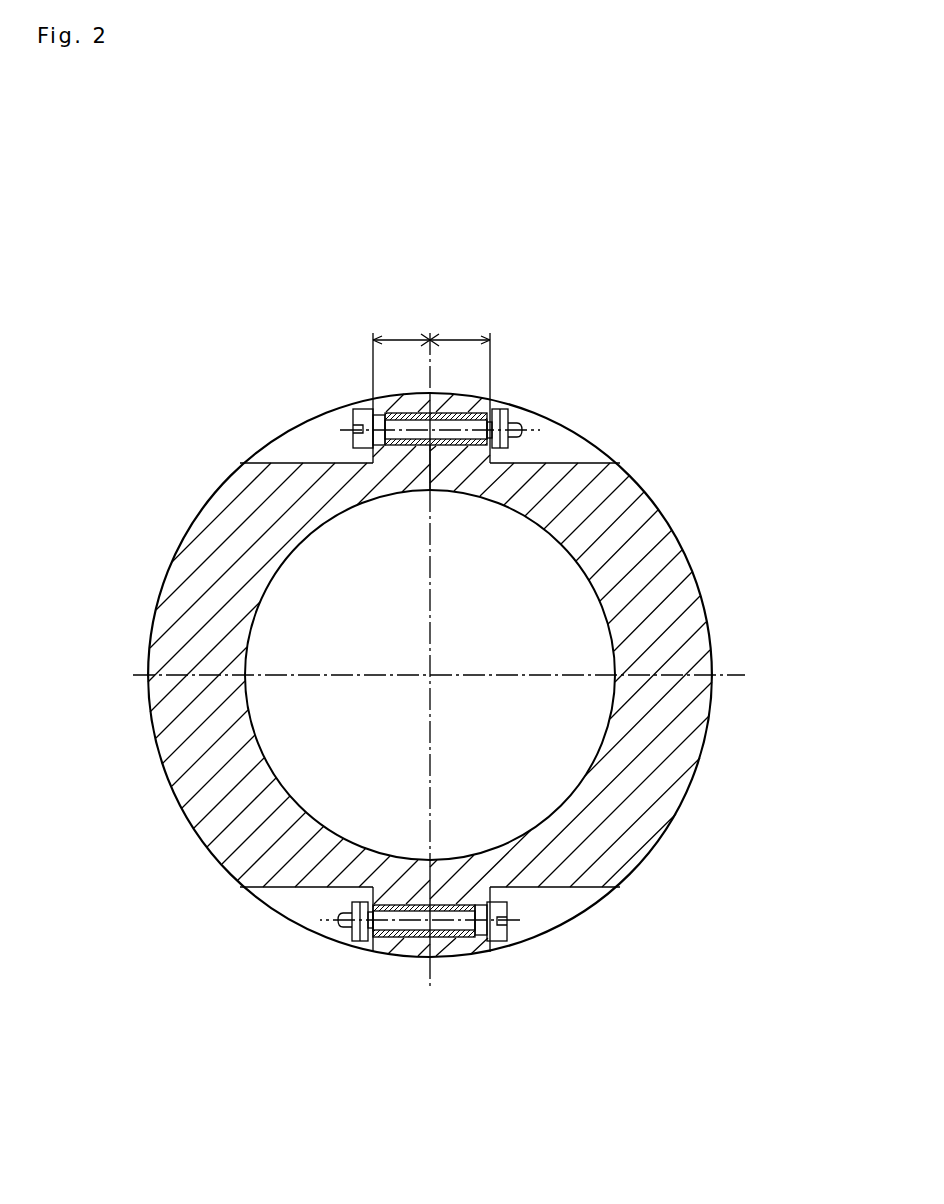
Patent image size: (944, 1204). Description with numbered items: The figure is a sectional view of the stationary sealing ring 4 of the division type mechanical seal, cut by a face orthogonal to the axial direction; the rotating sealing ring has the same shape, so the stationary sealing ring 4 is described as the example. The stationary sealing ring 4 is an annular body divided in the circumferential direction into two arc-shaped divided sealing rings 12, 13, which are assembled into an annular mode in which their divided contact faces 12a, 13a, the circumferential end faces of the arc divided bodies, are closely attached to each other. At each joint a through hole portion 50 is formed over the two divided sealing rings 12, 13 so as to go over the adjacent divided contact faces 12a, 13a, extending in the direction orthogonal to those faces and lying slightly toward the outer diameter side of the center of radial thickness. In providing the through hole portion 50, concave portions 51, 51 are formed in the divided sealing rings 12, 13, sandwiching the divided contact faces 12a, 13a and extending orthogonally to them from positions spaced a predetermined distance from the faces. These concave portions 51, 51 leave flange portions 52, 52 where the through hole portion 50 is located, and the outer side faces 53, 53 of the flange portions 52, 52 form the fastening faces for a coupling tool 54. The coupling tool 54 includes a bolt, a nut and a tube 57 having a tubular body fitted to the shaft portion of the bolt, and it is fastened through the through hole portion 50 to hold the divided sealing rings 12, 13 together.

The stationary sealing ring 4 is at (664, 491).
The divided sealing ring 12 is at (673, 570).
The divided sealing ring 13 is at (192, 562).
The divided contact face 12a is at (442, 465).
The divided contact face 13a is at (431, 470).
The through hole portion 50 is at (470, 417).
The concave portion 51 is at (278, 447).
The flange portion 52 is at (395, 405).
The outer side face 53 is at (330, 465).
The coupling tool 54 is at (350, 413).
The tube 57 is at (429, 400).